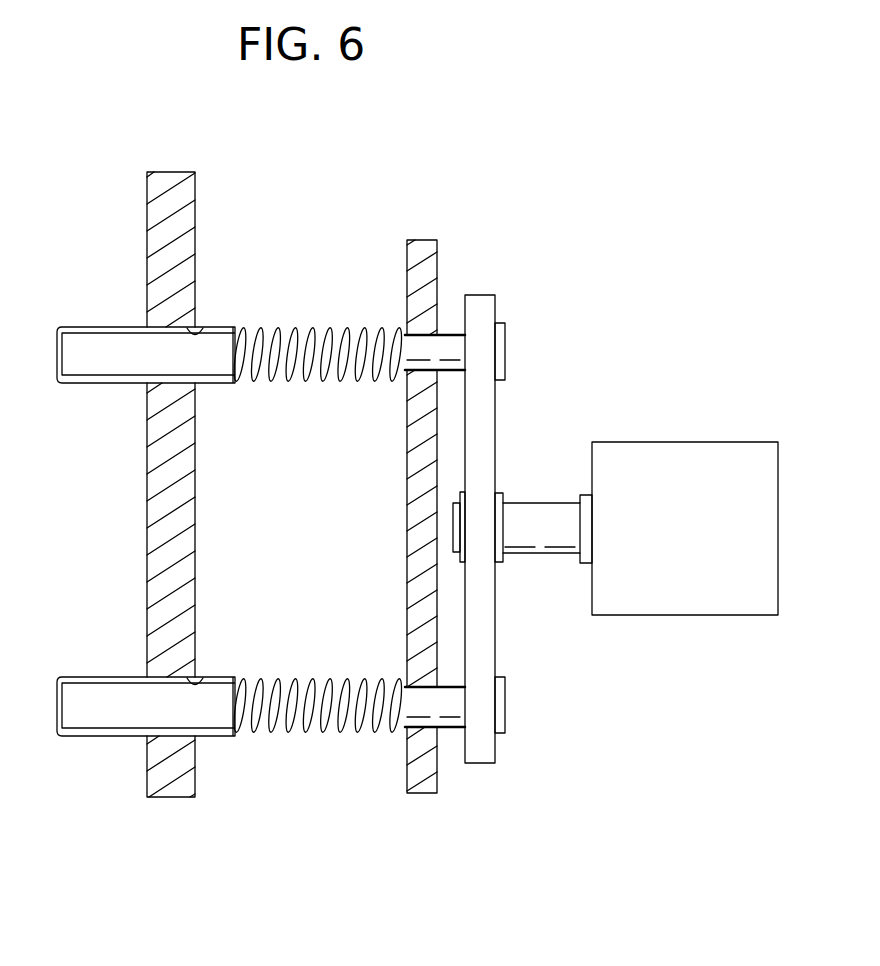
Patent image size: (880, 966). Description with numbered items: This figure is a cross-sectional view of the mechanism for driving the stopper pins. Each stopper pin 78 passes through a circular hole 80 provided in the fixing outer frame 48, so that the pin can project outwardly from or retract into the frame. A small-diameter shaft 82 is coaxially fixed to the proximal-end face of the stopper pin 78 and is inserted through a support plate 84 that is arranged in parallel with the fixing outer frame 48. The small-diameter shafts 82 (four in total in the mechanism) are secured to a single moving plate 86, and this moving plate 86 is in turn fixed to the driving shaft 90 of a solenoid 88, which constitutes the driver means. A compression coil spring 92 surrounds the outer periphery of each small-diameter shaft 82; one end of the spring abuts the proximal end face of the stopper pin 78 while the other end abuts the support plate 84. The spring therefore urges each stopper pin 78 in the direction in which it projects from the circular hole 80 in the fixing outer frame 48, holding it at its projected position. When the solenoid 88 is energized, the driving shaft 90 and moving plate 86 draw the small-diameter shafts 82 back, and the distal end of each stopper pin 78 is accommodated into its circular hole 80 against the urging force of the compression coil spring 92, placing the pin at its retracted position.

The fixing outer frame 48 is at (153, 199).
The stopper pin 78 is at (106, 343).
The circular hole 80 is at (210, 333).
The small-diameter shaft 82 is at (317, 340).
The support plate 84 is at (421, 245).
The moving plate 86 is at (485, 312).
The solenoid 88 is at (643, 456).
The driving shaft 90 is at (542, 525).
The compression coil spring 92 is at (302, 376).